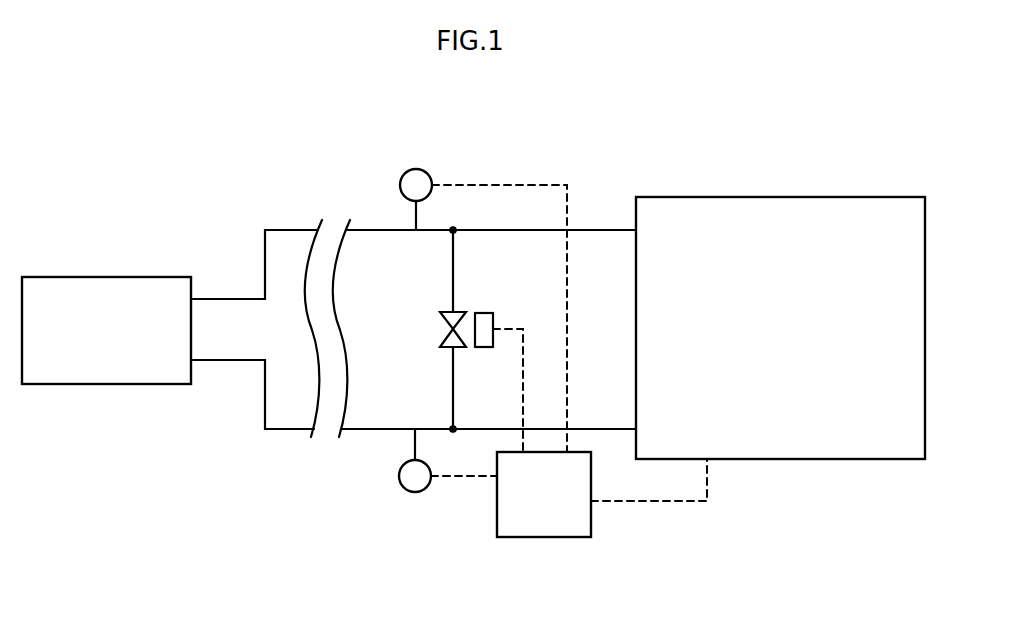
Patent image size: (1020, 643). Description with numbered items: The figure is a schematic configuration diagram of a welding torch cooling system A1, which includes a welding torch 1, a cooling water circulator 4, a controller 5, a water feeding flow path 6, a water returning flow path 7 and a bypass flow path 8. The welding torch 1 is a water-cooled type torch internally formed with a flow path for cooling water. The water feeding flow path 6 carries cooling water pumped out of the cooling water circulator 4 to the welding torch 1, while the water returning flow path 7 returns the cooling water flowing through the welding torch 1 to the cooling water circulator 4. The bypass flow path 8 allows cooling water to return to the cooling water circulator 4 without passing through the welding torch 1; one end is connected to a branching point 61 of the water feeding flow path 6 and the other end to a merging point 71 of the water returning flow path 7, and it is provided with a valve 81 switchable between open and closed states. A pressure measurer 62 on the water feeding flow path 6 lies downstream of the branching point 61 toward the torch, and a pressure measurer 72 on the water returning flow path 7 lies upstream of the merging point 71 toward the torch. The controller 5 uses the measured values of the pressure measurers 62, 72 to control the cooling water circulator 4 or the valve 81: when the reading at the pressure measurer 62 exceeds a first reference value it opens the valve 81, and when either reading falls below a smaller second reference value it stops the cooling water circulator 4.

The welding torch cooling system A1 is at (135, 119).
The welding torch 1 is at (109, 275).
The cooling water circulator 4 is at (791, 196).
The controller 5 is at (547, 538).
The water feeding flow path 6 is at (388, 431).
The water returning flow path 7 is at (387, 229).
The bypass flow path 8 is at (455, 283).
The branching point 61 is at (450, 427).
The pressure measurer 62 is at (410, 493).
The merging point 71 is at (450, 233).
The pressure measurer 72 is at (408, 171).
The valve 81 is at (450, 330).